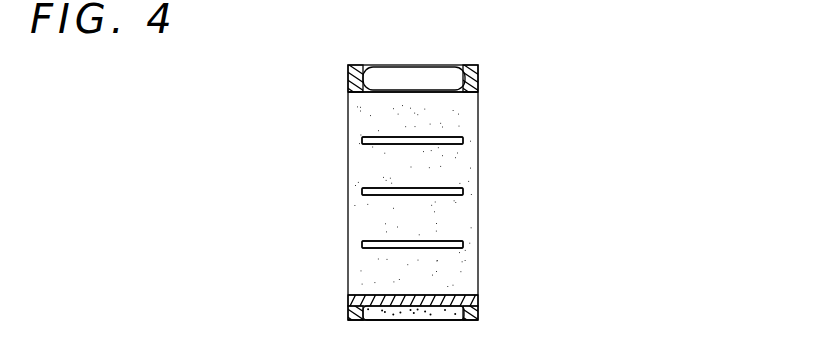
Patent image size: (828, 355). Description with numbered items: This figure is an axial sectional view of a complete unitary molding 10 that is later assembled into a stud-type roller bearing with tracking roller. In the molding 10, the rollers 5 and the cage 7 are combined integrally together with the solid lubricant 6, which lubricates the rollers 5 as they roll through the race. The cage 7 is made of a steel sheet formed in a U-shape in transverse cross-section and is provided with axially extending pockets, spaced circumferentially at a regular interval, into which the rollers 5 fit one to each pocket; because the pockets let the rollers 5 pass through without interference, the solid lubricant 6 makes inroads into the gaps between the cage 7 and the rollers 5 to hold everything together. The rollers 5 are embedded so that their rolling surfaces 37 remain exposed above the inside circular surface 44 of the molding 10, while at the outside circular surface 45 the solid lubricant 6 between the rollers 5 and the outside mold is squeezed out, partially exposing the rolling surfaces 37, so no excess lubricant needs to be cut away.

The complete unitary molding 10 is at (497, 124).
The rollers 5 is at (402, 84).
The solid lubricant 6 is at (348, 68).
The cage 7 is at (348, 80).
The rolling surfaces 37 is at (413, 93).
The inside circular surface 44 is at (348, 97).
The outside circular surface 45 is at (440, 320).